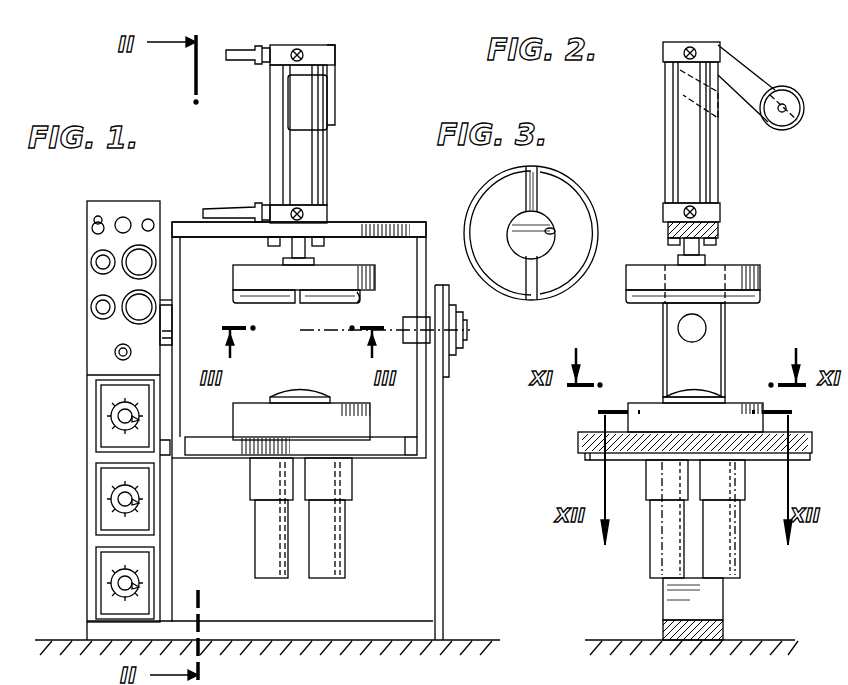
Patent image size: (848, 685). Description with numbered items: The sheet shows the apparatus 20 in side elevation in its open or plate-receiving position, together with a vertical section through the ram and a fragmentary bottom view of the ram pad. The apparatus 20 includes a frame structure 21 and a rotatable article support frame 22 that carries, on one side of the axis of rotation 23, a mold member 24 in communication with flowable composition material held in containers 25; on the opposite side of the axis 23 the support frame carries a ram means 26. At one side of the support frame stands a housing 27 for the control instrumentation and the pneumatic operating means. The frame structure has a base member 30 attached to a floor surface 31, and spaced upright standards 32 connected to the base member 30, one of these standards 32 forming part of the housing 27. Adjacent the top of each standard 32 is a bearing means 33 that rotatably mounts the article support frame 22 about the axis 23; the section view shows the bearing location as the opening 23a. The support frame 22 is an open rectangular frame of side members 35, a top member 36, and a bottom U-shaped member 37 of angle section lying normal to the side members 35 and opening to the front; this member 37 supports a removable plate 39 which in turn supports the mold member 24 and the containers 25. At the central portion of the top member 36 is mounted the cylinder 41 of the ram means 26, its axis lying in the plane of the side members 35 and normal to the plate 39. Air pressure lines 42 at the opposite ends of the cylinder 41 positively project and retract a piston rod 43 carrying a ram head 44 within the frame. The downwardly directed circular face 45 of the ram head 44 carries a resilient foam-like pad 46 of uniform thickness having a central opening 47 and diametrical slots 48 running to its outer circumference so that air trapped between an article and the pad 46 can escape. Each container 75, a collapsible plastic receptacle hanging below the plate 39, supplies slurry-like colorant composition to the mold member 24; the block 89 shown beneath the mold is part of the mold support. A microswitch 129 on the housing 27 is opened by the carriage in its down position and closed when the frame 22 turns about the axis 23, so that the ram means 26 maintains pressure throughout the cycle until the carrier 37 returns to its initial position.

In FIG. 1, the apparatus 20 is at (365, 130).
In FIG. 1, the frame structure 21 is at (446, 540).
In FIG. 1, the article support frame 22 is at (378, 230).
In FIG. 1, the axis of rotation 23 is at (335, 333).
In FIG. 1, the bore opening 23a is at (165, 333).
In FIG. 2, the bore opening 23a is at (694, 328).
In FIG. 1, the mold member 24 is at (286, 392).
In FIG. 2, the mold member 24 is at (715, 388).
In FIG. 1, the containers 25 is at (350, 530).
In FIG. 2, the containers 25 is at (745, 575).
In FIG. 1, the ram means 26 is at (345, 262).
In FIG. 2, the ram means 26 is at (775, 262).
In FIG. 1, the housing 27 is at (106, 201).
In FIG. 1, the base member 30 is at (268, 625).
In FIG. 2, the base member 30 is at (723, 628).
In FIG. 1, the floor surface 31 is at (450, 640).
In FIG. 2, the floor surface 31 is at (615, 640).
In FIG. 1, the upright standards 32 is at (172, 535).
In FIG. 2, the upright standards 32 is at (663, 592).
In FIG. 1, the bearing means 33 is at (190, 330).
In FIG. 1, the side members 35 is at (192, 233).
In FIG. 2, the side members 35 is at (665, 337).
In FIG. 1, the top member 36 is at (338, 230).
In FIG. 2, the top member 36 is at (668, 228).
In FIG. 1, the bottom U shaped member 37 is at (410, 455).
In FIG. 2, the bottom U shaped member 37 is at (578, 442).
In FIG. 1, the removable plate 39 is at (215, 455).
In FIG. 2, the removable plate 39 is at (797, 432).
In FIG. 1, the cylinder 41 is at (295, 161).
In FIG. 2, the cylinder 41 is at (692, 160).
In FIG. 1, the air pressure lines 42 is at (238, 60).
In FIG. 2, the air pressure lines 42 is at (700, 48).
In FIG. 1, the piston rod 43 is at (298, 248).
In FIG. 2, the piston rod 43 is at (705, 242).
In FIG. 1, the ram head 44 is at (236, 270).
In FIG. 2, the ram head 44 is at (762, 272).
In FIG. 1, the circular face 45 is at (360, 298).
In FIG. 3, the circular face 45 is at (548, 222).
In FIG. 1, the resilient pad 46 is at (276, 300).
In FIG. 3, the resilient pad 46 is at (490, 196).
In FIG. 2, the resilient pad 46 is at (750, 300).
In FIG. 3, the central opening 47 is at (556, 229).
In FIG. 1, the diametrical slots 48 is at (504, 328).
In FIG. 3, the diametrical slots 48 is at (535, 168).
In FIG. 1, the container 75 is at (262, 548).
In FIG. 2, the container 75 is at (654, 545).
In FIG. 1, the lower die block 89 is at (245, 425).
In FIG. 2, the lower die block 89 is at (656, 410).
In FIG. 1, the microswitch 129 is at (165, 447).